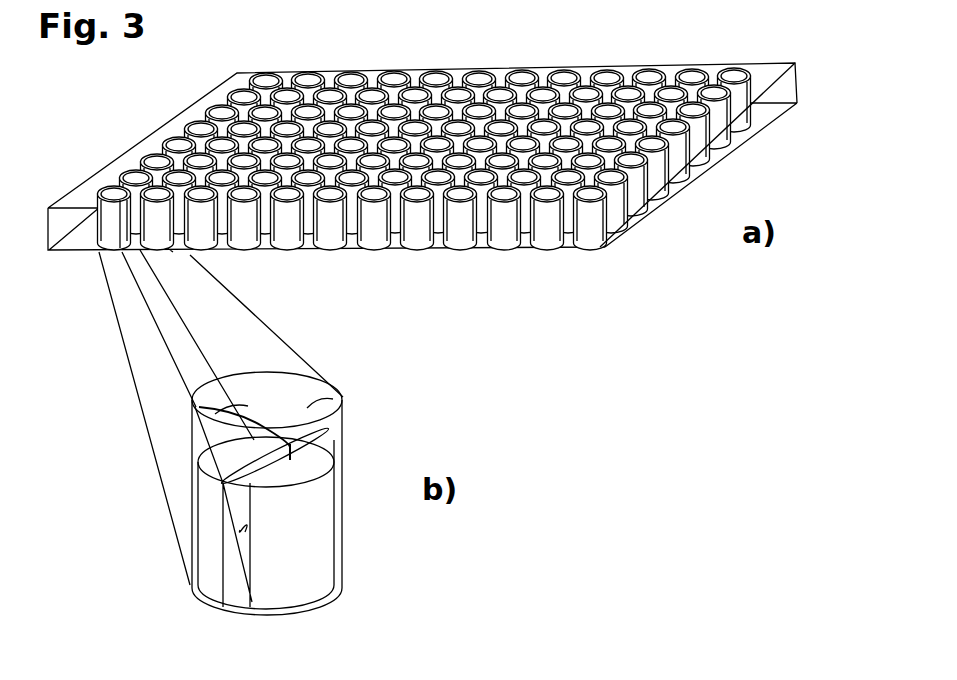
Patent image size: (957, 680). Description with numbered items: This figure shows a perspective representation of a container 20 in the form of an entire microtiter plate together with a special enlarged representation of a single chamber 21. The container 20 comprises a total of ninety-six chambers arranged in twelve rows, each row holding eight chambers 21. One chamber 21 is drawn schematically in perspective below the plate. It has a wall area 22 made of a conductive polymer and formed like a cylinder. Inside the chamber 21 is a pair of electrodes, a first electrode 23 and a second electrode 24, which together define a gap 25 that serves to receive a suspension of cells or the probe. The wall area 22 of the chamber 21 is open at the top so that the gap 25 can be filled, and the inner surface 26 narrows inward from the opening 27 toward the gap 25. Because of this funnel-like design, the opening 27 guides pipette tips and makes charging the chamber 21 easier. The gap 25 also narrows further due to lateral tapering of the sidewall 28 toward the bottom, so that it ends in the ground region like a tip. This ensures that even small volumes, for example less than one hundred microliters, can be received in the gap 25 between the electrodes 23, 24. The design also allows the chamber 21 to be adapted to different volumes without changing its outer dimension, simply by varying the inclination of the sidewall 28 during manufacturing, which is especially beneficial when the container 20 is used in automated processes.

The container 20 is at (609, 291).
The chamber 21 is at (465, 243).
The wall area 22 is at (335, 440).
The first electrode 23 is at (318, 560).
The second electrode 24 is at (210, 542).
The gap 25 is at (240, 530).
The inner surface 26 is at (233, 404).
The opening 27 is at (332, 399).
The sidewall 28 is at (245, 532).